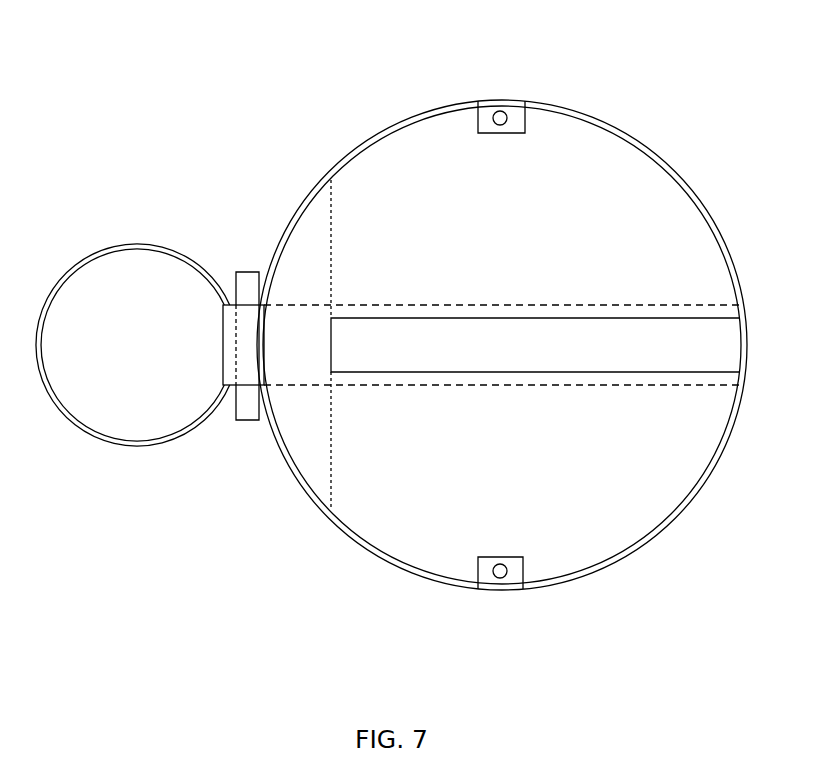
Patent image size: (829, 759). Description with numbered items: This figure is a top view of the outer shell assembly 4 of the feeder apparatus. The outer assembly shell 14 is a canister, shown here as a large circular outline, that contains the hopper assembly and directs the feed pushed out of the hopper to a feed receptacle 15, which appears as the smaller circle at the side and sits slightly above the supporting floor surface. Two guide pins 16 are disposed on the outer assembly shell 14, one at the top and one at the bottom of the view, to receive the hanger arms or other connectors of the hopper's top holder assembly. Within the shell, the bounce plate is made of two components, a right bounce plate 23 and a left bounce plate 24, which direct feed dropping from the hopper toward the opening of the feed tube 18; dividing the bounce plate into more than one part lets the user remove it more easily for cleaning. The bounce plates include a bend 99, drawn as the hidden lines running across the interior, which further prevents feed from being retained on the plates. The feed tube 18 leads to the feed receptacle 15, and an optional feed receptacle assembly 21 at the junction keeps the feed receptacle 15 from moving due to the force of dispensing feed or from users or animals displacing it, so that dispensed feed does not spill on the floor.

The outer shell assembly 4 is at (312, 140).
The outer assembly shell 14 is at (420, 110).
The feed receptacle 15 is at (122, 418).
The guide pins 16 is at (500, 112).
The feed tube 18 is at (223, 330).
The feed receptacle assembly 21 is at (248, 423).
The right bounce plate 23 is at (595, 152).
The left bounce plate 24 is at (592, 520).
The bend 99 is at (333, 247).